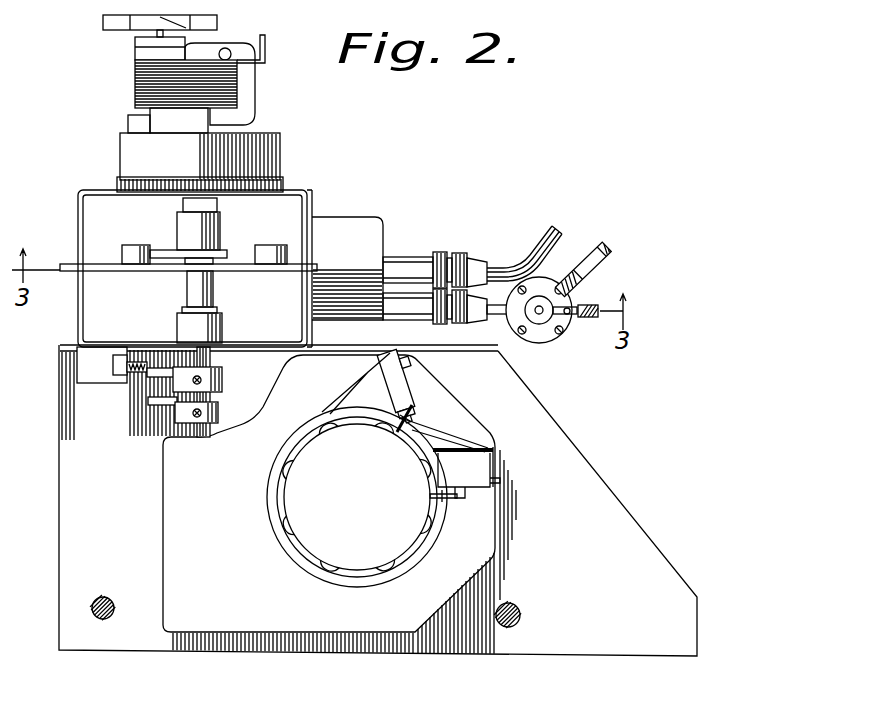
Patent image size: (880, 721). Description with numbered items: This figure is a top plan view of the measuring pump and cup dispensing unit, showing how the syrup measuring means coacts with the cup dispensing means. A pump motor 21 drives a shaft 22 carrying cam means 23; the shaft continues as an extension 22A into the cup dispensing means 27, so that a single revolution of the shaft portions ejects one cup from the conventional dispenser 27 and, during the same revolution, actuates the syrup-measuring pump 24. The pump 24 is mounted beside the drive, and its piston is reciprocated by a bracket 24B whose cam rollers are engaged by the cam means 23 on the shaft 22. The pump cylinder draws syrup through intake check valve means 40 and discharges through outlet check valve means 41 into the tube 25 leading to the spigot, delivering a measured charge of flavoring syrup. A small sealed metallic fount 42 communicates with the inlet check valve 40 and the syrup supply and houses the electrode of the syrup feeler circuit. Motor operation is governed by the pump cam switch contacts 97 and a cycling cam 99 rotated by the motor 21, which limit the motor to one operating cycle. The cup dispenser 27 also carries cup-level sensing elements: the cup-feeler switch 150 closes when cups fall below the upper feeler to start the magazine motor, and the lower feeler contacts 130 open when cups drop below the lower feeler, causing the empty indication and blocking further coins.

The pump motor 21 is at (248, 92).
The shaft 22 is at (207, 290).
The shaft extension 22A is at (193, 428).
The cam means 23 is at (162, 250).
The syrup-measuring pump 24 is at (360, 256).
The bracket 24B is at (100, 274).
The tube 25 is at (550, 230).
The cup dispensing means 27 is at (237, 563).
The intake check valve means 40 is at (410, 321).
The outlet check valve means 41 is at (397, 260).
The fount 42 is at (538, 343).
The pump cam switch contacts 97 is at (93, 378).
The cycling cam 99 is at (148, 401).
The lower cup-feeler contacts 130 is at (432, 498).
The cup-feeler switch 150 is at (403, 430).